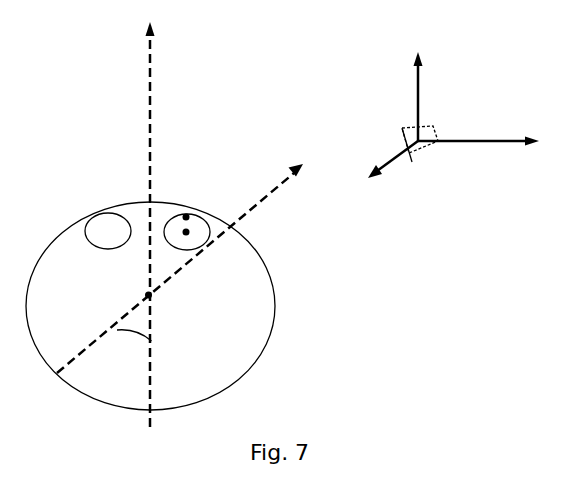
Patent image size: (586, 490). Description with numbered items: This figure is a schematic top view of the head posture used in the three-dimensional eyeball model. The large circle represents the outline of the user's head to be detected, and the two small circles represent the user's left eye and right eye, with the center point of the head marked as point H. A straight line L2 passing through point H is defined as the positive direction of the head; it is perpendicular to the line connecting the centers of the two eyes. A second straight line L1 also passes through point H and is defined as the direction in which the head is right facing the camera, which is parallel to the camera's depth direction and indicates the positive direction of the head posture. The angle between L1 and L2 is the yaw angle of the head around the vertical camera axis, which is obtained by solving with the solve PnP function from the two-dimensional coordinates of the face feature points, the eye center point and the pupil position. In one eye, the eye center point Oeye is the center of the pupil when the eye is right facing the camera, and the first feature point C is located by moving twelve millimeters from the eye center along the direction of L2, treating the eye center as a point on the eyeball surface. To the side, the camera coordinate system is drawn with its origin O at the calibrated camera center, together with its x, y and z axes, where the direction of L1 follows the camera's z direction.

The straight line L2 is at (131, 224).
The straight line L1 is at (180, 258).
The center point of the head H is at (139, 289).
The eye center point Oeye is at (206, 208).
The first feature point C is at (192, 233).
The origin of the camera coordinate system O is at (437, 146).
The X-axis of the camera coordinate system x is at (478, 151).
The Y-axis of the camera coordinate system y is at (425, 95).
The Z-axis of the camera coordinate system z is at (387, 159).